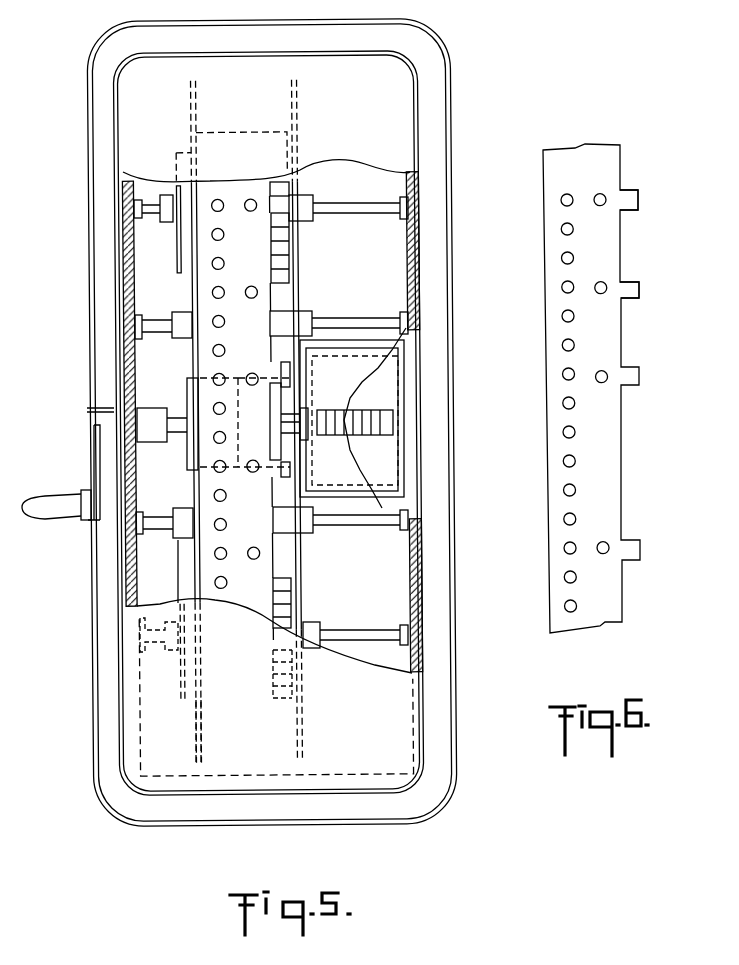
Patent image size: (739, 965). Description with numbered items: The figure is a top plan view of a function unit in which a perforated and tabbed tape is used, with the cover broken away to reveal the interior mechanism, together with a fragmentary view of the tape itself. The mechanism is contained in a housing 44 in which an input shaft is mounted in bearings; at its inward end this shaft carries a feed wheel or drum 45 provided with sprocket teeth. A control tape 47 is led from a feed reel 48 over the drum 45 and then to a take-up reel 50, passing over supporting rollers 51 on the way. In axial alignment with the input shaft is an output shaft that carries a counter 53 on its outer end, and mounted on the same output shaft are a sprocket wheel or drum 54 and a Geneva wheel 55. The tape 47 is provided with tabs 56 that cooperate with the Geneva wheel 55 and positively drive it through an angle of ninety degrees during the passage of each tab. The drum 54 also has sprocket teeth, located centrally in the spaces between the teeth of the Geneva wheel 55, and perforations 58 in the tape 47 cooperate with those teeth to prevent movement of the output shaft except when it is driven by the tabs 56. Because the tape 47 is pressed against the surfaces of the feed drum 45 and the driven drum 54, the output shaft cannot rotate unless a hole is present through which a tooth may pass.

In FIG. 5, the housing 44 is at (445, 122).
In FIG. 5, the feed wheel or drum 45 is at (190, 394).
In FIG. 5, the control tape 47 is at (253, 268).
In FIG. 6, the control tape 47 is at (612, 461).
In FIG. 5, the feed reel 48 is at (205, 736).
In FIG. 5, the take-up reel 50 is at (300, 126).
In FIG. 5, the supporting rollers 51 is at (318, 322).
In FIG. 5, the counter 53 is at (338, 382).
In FIG. 5, the sprocket wheel or drum 54 is at (290, 378).
In FIG. 5, the Geneva wheel 55 is at (282, 447).
In FIG. 5, the tabs 56 is at (284, 562).
In FIG. 6, the tabs 56 is at (630, 287).
In FIG. 5, the perforations 58 is at (258, 206).
In FIG. 6, the perforations 58 is at (599, 372).